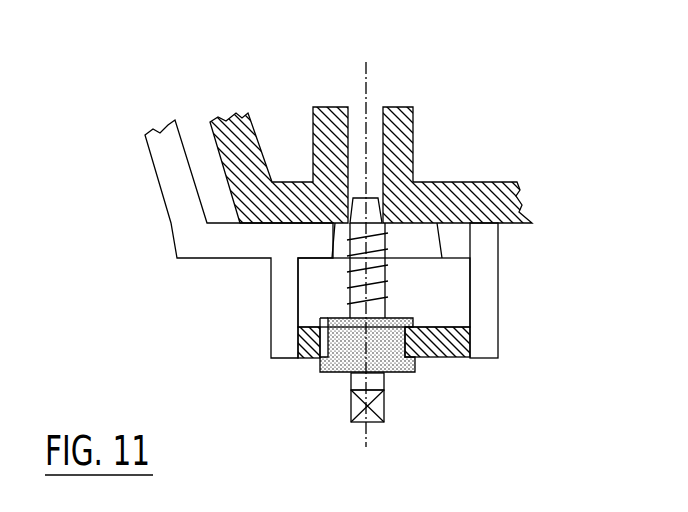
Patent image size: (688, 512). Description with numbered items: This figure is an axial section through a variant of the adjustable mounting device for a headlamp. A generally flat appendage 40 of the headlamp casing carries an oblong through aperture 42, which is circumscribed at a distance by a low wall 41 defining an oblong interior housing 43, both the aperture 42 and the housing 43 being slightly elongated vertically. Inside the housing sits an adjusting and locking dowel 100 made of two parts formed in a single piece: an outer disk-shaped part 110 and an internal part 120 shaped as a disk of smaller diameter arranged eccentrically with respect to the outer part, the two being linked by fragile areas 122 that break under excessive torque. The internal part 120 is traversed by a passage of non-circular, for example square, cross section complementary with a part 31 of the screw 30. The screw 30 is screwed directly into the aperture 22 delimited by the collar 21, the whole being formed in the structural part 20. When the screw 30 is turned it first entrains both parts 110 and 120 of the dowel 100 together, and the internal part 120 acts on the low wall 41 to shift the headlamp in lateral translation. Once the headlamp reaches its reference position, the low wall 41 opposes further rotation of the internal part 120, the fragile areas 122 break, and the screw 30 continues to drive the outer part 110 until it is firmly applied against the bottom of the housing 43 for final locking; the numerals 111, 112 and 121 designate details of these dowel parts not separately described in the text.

The structural part 20 is at (371, 123).
The collar 21 is at (321, 107).
The aperture 22 is at (350, 112).
The screw 30 is at (388, 280).
The part of the screw 31 is at (375, 425).
The appendage 40 is at (210, 239).
The low wall 41 is at (278, 292).
The oblong through aperture 42 is at (442, 248).
The interior housing 43 is at (463, 276).
The dowel 100 is at (435, 365).
The outer disk-shaped part 110 is at (453, 343).
The hatched retaining block 111 is at (298, 338).
The retaining block edge 112 is at (335, 378).
The internal part 120 is at (335, 392).
The housing flange 121 is at (353, 348).
The fragile areas 122 is at (320, 320).